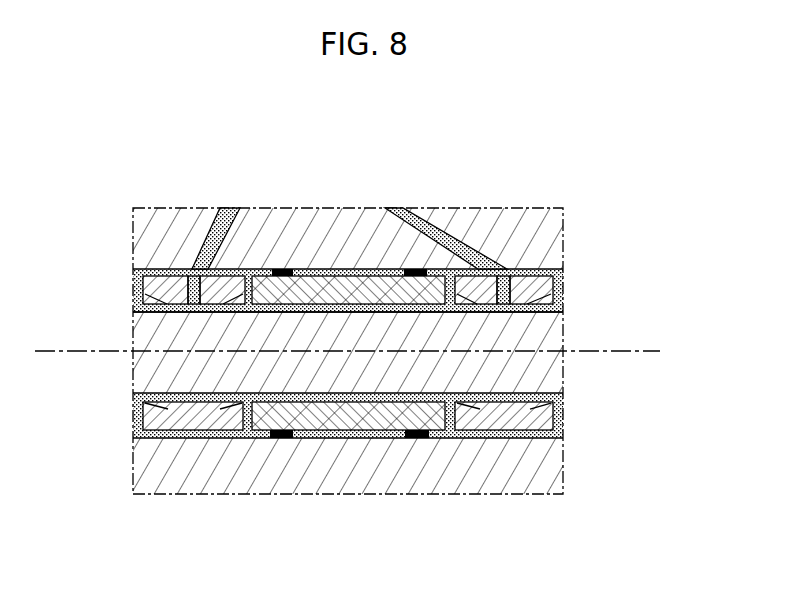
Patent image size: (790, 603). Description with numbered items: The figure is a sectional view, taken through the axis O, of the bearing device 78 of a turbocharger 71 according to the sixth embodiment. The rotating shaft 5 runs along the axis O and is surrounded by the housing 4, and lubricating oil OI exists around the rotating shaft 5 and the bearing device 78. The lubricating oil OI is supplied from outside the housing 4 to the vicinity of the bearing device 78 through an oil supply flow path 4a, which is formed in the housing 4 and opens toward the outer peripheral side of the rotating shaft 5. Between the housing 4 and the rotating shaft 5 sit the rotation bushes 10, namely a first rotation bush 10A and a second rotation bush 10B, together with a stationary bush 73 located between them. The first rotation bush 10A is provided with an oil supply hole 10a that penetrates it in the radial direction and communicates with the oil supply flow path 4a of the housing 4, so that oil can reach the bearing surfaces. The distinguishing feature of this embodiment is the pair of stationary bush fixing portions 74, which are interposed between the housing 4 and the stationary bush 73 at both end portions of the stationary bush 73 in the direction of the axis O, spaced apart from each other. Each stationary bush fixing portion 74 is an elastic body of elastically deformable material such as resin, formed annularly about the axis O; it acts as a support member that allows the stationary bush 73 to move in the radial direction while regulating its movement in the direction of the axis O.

The turbocharger 71 is at (556, 131).
The bearing device 78 is at (476, 179).
The stationary bush 73 is at (337, 274).
The oil supply flow path 4a is at (228, 227).
The housing 4 is at (540, 473).
The oil supply hole 10a is at (192, 283).
The first rotation bush 10A is at (205, 418).
The second rotation bush 10B is at (500, 415).
The rotation bush 10 is at (348, 434).
The stationary bush fixing portion 74 is at (283, 438).
The rotating shaft 5 is at (552, 372).
The axis O is at (637, 349).
The lubricating oil OI is at (246, 314).